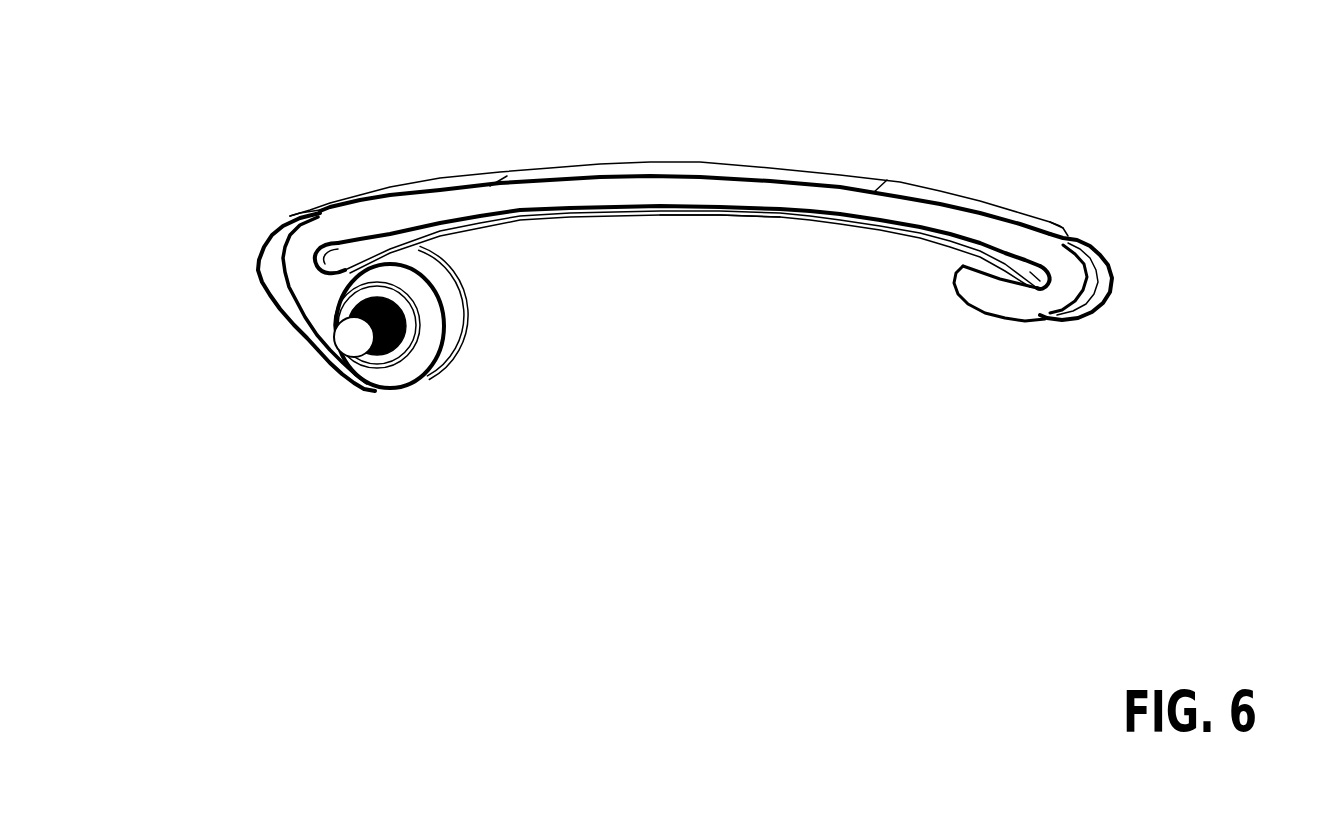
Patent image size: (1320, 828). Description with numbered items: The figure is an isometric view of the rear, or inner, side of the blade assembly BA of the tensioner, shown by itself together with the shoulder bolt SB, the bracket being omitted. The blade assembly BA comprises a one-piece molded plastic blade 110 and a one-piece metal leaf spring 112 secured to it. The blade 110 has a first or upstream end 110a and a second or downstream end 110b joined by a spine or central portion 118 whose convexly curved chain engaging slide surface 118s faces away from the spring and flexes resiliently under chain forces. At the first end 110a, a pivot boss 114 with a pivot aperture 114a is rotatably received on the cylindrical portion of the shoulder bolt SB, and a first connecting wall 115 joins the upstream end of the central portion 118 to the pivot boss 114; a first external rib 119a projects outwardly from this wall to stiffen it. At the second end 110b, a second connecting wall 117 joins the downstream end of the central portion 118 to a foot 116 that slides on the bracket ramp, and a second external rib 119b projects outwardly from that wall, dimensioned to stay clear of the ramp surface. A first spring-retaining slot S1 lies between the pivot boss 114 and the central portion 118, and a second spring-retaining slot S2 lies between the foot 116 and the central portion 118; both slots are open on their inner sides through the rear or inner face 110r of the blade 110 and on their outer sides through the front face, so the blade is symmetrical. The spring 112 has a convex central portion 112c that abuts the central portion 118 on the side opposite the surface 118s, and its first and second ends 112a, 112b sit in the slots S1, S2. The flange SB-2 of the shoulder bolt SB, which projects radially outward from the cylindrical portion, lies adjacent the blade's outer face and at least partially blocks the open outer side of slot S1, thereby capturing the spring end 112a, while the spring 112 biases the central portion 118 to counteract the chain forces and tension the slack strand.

The blade 110 is at (443, 200).
The first end of the blade 110a is at (330, 222).
The second end of the blade 110b is at (980, 228).
The rear or inner face of the blade 110r is at (858, 208).
The leaf spring 112 is at (545, 220).
The first end of the spring 112a is at (307, 305).
The second end of the spring 112b is at (1023, 287).
The convex central portion of the spring 112c is at (713, 220).
The pivot boss 114 is at (448, 298).
The pivot aperture 114a is at (388, 367).
The first connecting wall 115 is at (303, 273).
The foot 116 is at (983, 293).
The second connecting wall 117 is at (1063, 283).
The central portion 118 is at (570, 192).
The chain engaging slide surface 118s is at (663, 168).
The first external rib 119a is at (273, 267).
The second external rib 119b is at (1110, 272).
The first spring-retaining slot S1 is at (355, 237).
The second spring-retaining slot S2 is at (1053, 253).
The shoulder bolt SB is at (347, 345).
The shoulder bolt flange SB-2 is at (448, 261).
The blade assembly BA is at (850, 132).